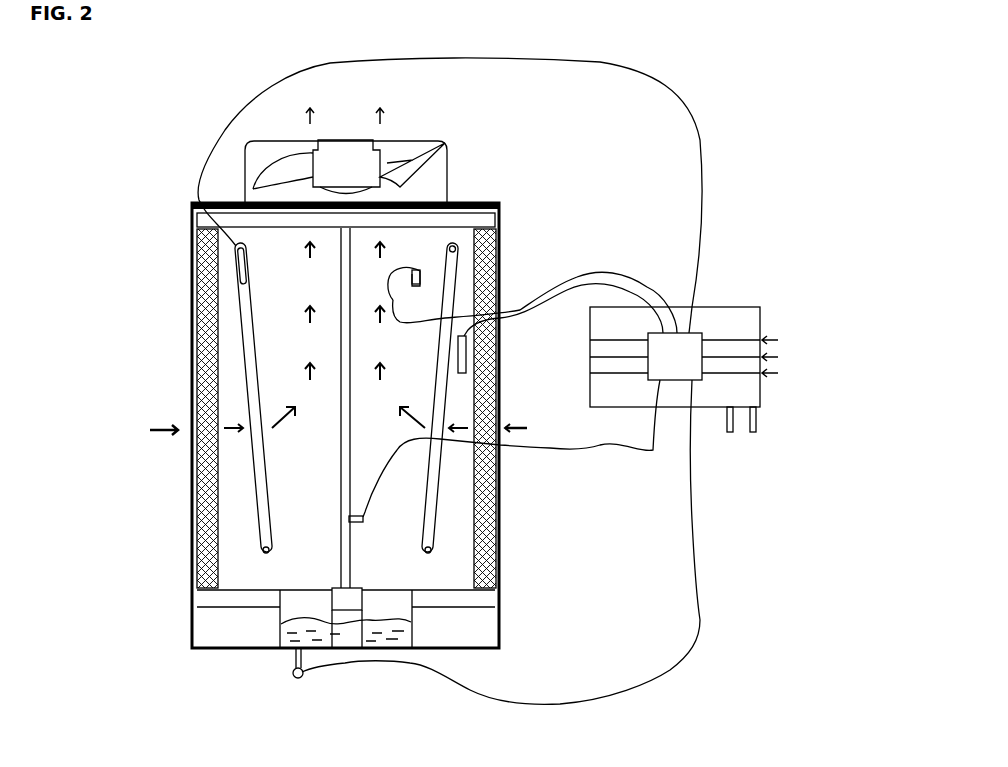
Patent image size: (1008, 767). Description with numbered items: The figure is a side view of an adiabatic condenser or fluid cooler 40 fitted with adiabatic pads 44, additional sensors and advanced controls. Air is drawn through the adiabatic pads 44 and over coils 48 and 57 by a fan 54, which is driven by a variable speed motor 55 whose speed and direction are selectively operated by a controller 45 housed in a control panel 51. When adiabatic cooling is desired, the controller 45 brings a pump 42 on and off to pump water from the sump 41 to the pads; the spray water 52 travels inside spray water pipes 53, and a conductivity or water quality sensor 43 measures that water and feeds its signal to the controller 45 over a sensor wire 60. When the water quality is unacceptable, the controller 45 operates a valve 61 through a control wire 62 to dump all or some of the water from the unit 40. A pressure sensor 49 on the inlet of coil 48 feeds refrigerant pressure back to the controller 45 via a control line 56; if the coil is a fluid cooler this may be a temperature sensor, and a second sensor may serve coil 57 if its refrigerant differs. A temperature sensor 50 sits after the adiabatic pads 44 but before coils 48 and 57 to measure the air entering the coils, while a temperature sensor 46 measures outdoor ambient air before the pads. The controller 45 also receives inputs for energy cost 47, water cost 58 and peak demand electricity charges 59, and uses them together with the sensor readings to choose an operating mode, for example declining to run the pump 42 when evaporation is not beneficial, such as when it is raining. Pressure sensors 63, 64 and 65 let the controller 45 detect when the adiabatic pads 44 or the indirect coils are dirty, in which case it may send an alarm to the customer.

The adiabatic condenser or fluid cooler 40 is at (172, 189).
The sump 41 is at (280, 650).
The pump 42 is at (346, 636).
The conductivity sensor 43 is at (363, 520).
The adiabatic pads 44 is at (200, 535).
The controller 45 is at (700, 380).
The temperature sensor 46 is at (733, 433).
The energy cost input 47 is at (760, 375).
The coil 48 is at (241, 327).
The pressure sensor 49 is at (233, 264).
The temperature sensor 50 is at (243, 547).
The control panel 51 is at (712, 307).
The spray water 52 is at (495, 221).
The spray water pipes 53 is at (495, 211).
The fan 54 is at (413, 160).
The variable speed motor 55 is at (342, 157).
The control line 56 is at (702, 140).
The coil 57 is at (442, 474).
The water cost input 58 is at (752, 340).
The peak demand electricity charges input 59 is at (877, 355).
The sensor wire 60 is at (577, 448).
The valve 61 is at (302, 677).
The control wire 62 is at (700, 623).
The pressure sensor 63 is at (468, 356).
The pressure sensor 64 is at (420, 284).
The pressure sensor 65 is at (755, 434).